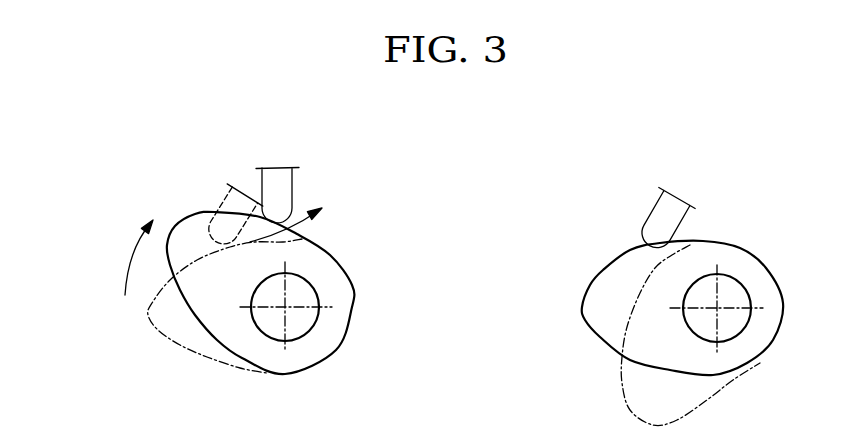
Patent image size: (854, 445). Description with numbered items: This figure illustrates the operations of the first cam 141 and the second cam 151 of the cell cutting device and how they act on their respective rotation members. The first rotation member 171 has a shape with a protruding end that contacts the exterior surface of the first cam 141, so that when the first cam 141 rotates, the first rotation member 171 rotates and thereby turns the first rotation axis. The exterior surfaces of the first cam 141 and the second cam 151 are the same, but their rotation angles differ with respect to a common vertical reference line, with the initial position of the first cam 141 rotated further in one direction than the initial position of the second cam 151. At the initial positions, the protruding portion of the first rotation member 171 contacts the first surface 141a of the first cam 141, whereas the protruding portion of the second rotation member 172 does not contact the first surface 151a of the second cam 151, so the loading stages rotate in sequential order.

The first cam 141 is at (335, 280).
The first surface of the first cam 141a is at (168, 343).
The first rotation member 171 is at (283, 187).
The second cam 151 is at (600, 328).
The first surface of the second cam 151a is at (683, 246).
The second rotation member 172 is at (647, 227).